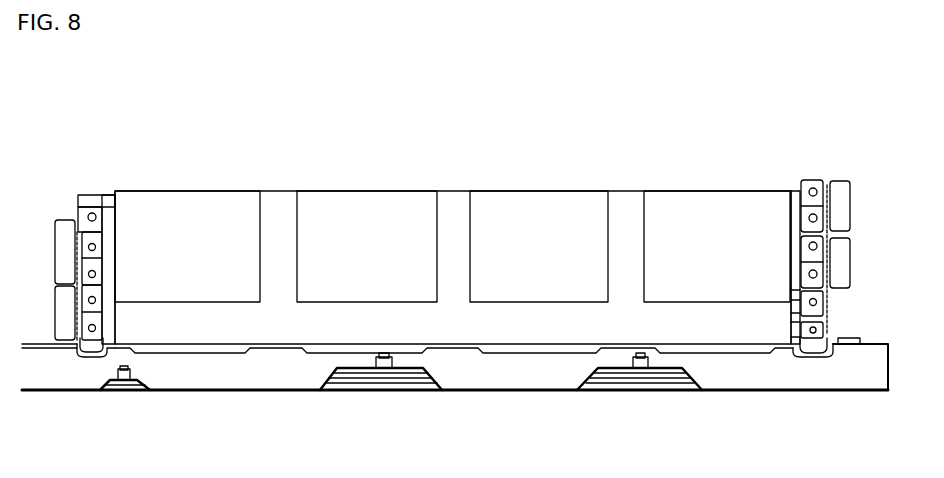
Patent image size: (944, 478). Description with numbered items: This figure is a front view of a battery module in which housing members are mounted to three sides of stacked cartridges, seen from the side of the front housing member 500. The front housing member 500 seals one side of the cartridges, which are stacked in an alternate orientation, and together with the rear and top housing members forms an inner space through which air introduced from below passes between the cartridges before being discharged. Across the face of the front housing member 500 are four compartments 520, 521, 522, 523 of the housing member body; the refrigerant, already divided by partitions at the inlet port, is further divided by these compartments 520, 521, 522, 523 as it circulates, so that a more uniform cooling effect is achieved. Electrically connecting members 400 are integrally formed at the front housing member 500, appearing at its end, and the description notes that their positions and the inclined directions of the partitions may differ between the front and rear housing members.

The electrically connecting member 400 is at (815, 178).
The front housing member 500 is at (498, 328).
The compartment 520 is at (183, 208).
The compartment 521 is at (356, 208).
The compartment 522 is at (538, 208).
The compartment 523 is at (700, 208).